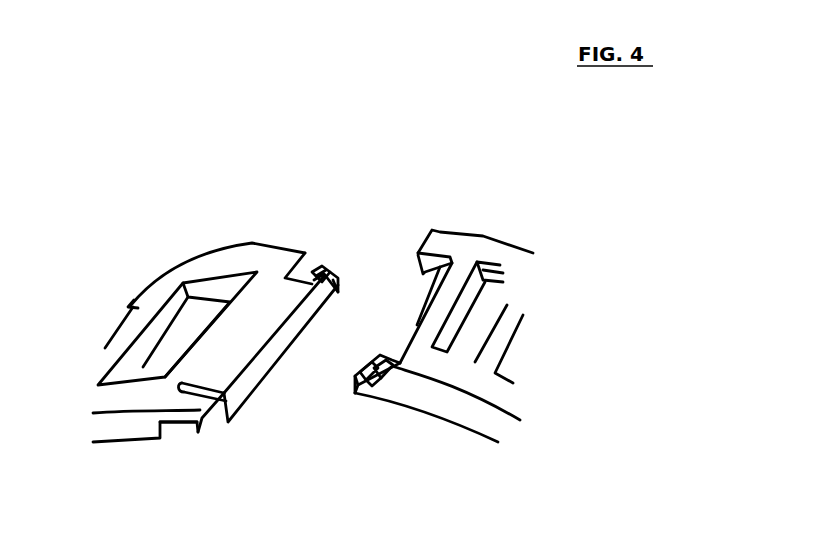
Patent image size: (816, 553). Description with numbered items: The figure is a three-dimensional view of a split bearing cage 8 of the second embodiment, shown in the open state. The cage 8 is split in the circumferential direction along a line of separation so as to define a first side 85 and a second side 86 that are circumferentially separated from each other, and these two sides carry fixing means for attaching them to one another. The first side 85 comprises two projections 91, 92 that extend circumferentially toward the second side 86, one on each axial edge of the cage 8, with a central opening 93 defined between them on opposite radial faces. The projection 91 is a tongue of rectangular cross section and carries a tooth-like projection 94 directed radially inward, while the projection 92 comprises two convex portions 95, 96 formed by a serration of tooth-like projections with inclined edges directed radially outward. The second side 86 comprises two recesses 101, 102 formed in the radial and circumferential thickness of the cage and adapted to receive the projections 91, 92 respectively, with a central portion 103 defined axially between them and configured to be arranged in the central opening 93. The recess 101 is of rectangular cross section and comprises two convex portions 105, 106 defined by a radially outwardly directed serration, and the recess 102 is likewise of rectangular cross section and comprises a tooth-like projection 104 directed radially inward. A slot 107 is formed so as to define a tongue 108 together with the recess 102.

The cage 8 is at (548, 360).
The first side 85 is at (403, 305).
The second side 86 is at (286, 350).
The projection 91 is at (440, 237).
The projection 92 is at (354, 396).
The central opening 93 is at (420, 295).
The tooth-like projection 94 is at (420, 272).
The convex portion 95 is at (357, 367).
The convex portion 96 is at (373, 382).
The recess 101 is at (302, 250).
The recess 102 is at (179, 426).
The central portion 103 is at (255, 352).
The tooth-like projection 104 is at (194, 437).
The convex portion 105 is at (331, 262).
The convex portion 106 is at (321, 262).
The slot 107 is at (230, 397).
The tongue 108 is at (150, 414).